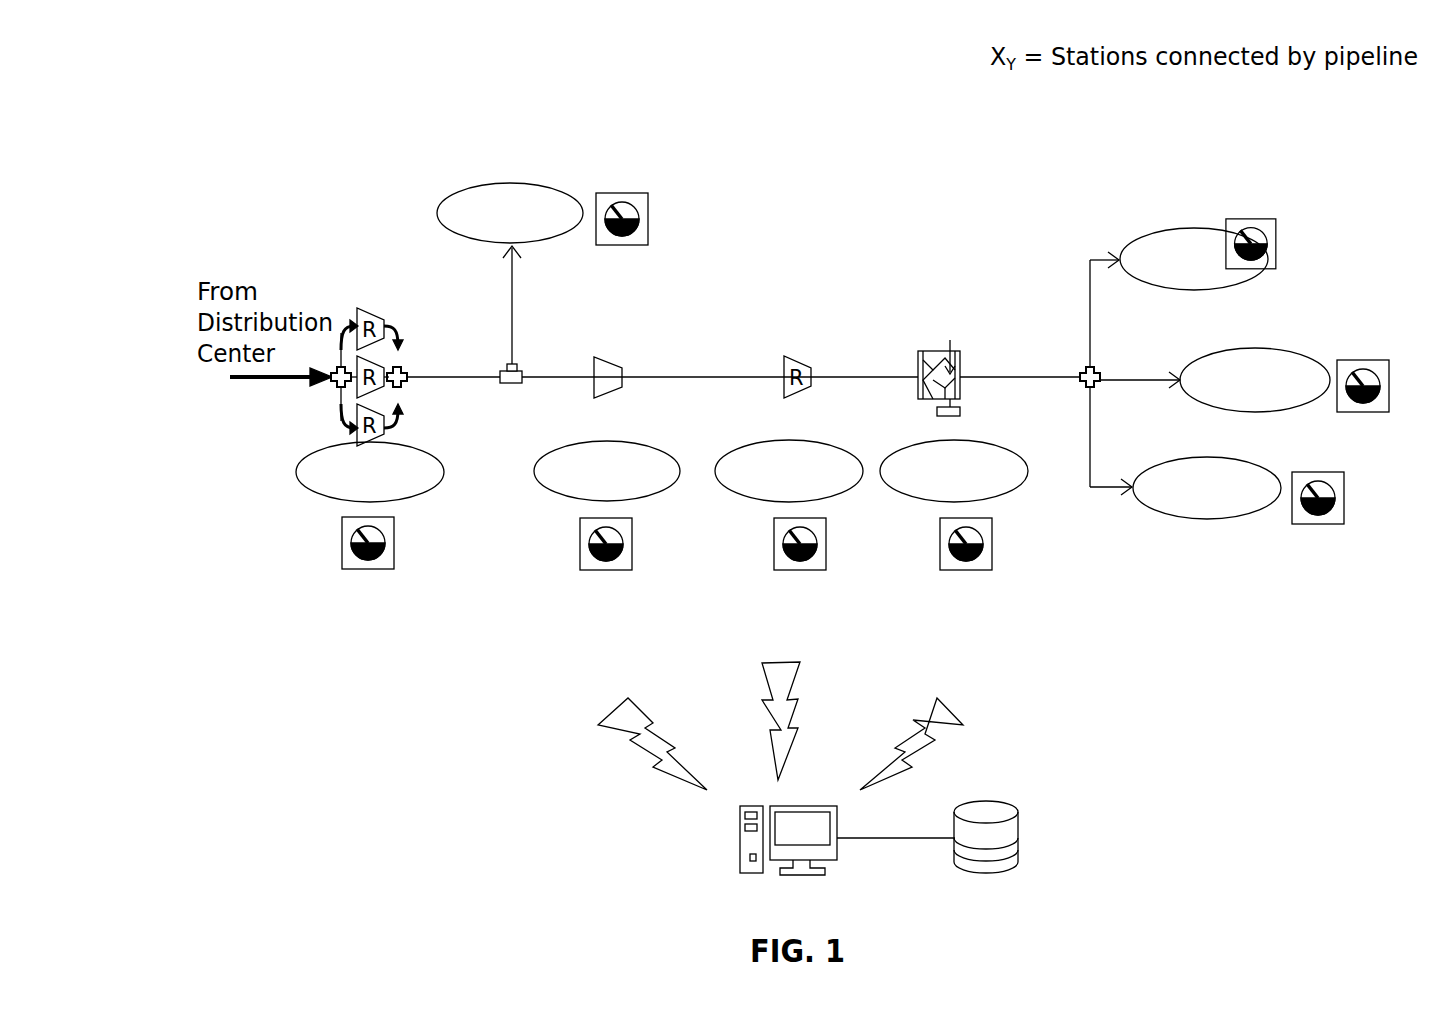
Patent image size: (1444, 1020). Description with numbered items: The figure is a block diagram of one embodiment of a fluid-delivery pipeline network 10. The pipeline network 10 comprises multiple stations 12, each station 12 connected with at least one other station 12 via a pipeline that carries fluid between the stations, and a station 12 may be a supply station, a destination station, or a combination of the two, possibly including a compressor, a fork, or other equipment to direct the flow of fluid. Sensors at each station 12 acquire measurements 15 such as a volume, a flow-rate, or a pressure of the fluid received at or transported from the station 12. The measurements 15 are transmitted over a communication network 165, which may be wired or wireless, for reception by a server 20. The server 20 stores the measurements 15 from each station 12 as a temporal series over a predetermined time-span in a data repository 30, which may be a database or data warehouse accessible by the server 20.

The fluid-delivery pipeline network 10 is at (520, 137).
The station 12 is at (322, 497).
The measurements 15 is at (393, 553).
The server 20 is at (709, 840).
The data repository 30 is at (1118, 837).
The communication network 165 is at (877, 726).